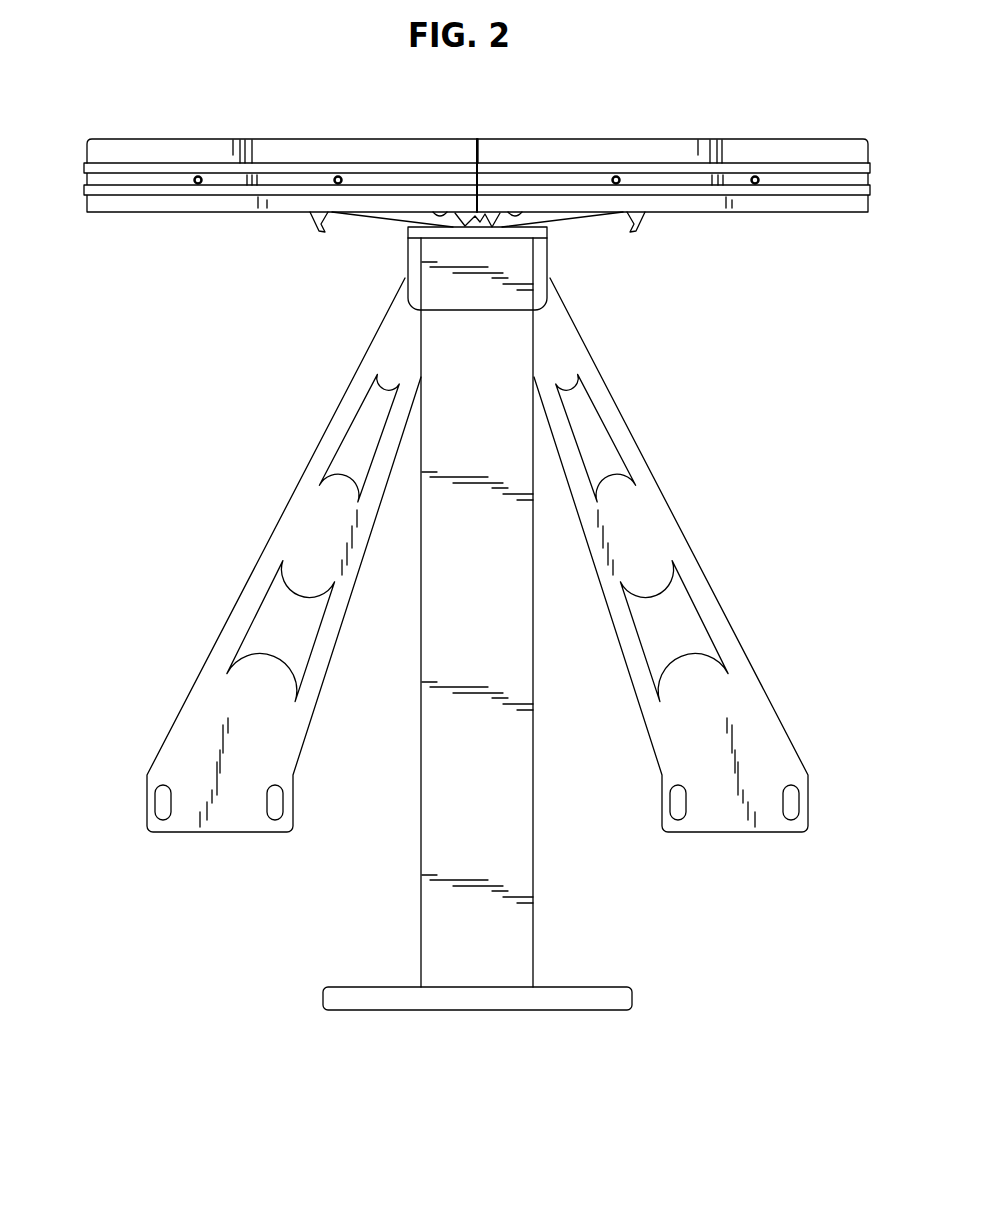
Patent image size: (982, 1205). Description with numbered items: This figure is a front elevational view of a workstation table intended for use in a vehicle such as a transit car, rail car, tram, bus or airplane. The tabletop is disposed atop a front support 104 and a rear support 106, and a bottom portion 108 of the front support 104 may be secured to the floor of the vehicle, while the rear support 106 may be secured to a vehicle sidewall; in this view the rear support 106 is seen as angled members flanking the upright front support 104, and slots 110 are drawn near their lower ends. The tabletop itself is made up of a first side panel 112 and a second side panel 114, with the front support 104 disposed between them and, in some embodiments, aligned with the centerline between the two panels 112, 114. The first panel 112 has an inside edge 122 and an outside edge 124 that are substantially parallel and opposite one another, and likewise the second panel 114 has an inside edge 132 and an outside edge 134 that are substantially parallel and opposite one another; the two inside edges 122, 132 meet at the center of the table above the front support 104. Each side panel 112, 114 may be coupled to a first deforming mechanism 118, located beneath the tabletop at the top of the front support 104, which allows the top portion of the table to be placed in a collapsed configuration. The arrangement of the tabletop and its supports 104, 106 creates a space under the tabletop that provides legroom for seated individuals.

The front support 104 is at (443, 918).
The rear support 106 is at (190, 727).
The bottom portion 108 is at (337, 1000).
The mounting slot 110 is at (163, 815).
The first side panel 112 is at (122, 204).
The second side panel 114 is at (750, 203).
The first deforming mechanism 118 is at (363, 250).
The inside edge 122 is at (470, 148).
The outside edge 124 is at (87, 150).
The inside edge 132 is at (480, 148).
The outside edge 134 is at (867, 152).